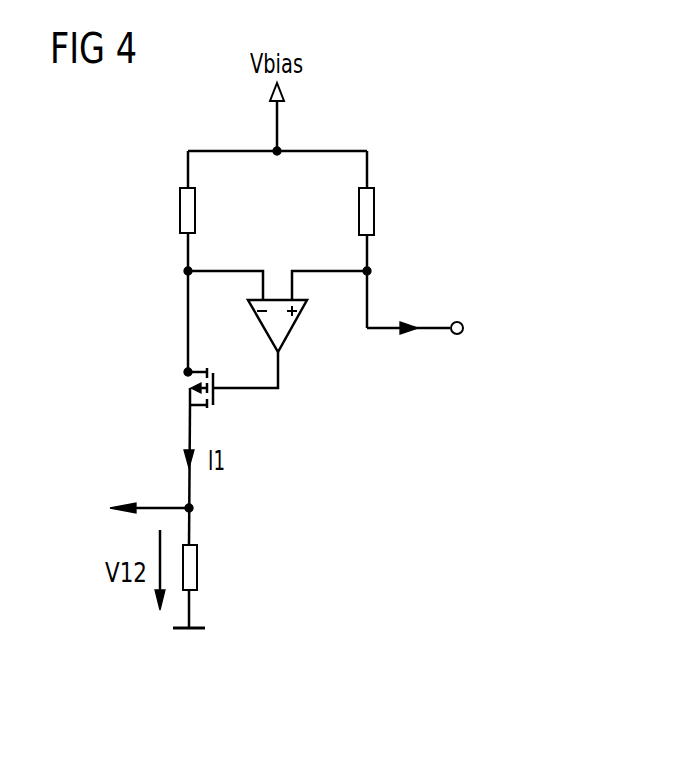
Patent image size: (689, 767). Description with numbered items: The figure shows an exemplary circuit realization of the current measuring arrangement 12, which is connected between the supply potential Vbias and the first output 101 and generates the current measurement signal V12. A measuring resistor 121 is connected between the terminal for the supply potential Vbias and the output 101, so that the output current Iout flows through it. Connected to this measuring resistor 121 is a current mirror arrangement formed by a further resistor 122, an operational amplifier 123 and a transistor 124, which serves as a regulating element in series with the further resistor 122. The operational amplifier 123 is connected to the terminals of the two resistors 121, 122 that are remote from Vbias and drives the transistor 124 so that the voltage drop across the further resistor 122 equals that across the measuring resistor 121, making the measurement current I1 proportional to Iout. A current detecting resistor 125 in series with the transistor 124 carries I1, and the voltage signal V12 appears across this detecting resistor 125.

The current measuring arrangement 12 is at (444, 172).
The first output 101 is at (456, 321).
The measuring resistor 121 is at (358, 213).
The further resistor 122 is at (180, 220).
The operational amplifier 123 is at (297, 327).
The transistor 124 is at (214, 397).
The current detecting resistor 125 is at (198, 568).